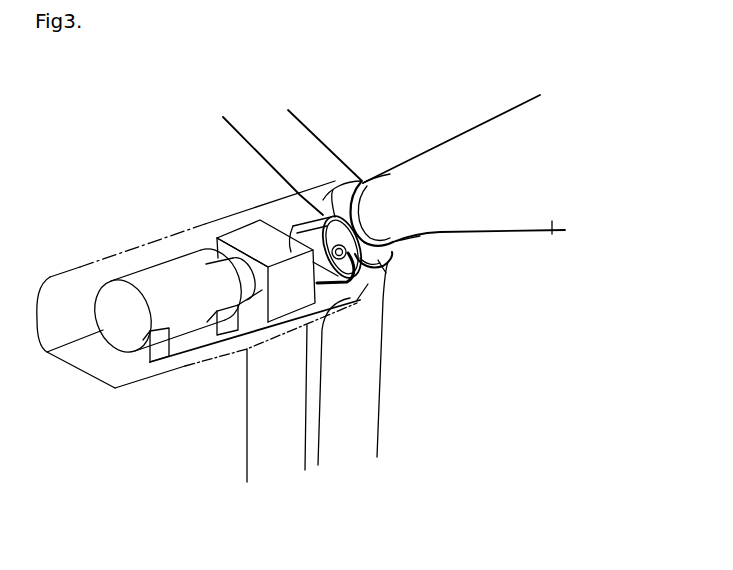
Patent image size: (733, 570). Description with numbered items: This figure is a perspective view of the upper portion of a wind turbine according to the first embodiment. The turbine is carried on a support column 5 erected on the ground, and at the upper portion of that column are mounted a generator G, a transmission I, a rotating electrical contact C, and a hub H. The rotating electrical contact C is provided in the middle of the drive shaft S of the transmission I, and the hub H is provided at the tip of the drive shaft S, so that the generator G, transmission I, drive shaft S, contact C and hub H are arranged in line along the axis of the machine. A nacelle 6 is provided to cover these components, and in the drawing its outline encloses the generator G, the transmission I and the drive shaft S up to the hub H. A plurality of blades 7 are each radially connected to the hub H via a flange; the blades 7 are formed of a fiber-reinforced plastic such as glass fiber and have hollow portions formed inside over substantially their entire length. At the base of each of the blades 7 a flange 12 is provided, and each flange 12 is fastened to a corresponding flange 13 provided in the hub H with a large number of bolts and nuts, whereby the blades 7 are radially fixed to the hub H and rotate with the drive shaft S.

The support column 5 is at (255, 405).
The nacelle 6 is at (165, 232).
The blades 7 is at (295, 117).
The flanges 12 is at (345, 188).
The flanges 13 is at (442, 345).
The generator G is at (133, 280).
The transmission I is at (238, 232).
The drive shaft S is at (293, 224).
The rotating electrical contact C is at (323, 213).
The hub H is at (388, 257).